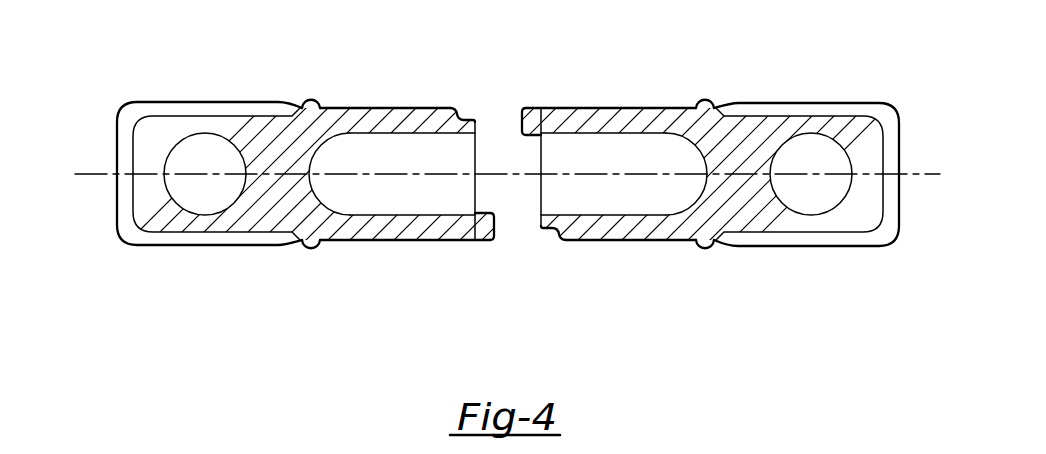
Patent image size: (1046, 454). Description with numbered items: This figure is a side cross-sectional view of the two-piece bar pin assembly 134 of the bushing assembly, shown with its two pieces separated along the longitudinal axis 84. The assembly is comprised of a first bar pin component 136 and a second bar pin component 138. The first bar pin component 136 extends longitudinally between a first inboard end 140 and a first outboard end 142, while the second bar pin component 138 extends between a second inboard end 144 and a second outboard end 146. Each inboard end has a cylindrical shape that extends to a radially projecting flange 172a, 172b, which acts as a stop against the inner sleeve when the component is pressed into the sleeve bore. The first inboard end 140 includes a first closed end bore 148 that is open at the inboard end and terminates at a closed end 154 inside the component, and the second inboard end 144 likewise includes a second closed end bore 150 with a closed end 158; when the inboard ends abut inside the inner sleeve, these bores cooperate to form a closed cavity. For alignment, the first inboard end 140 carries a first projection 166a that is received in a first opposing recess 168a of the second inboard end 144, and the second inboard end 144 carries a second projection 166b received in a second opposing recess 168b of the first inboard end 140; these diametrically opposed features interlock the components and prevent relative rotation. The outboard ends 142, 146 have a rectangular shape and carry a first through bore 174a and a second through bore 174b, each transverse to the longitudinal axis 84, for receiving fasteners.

The longitudinal axis 84 is at (921, 172).
The two-piece bar pin assembly 134 is at (671, 291).
The first bar pin component 136 is at (240, 122).
The second bar pin component 138 is at (788, 124).
The first inboard end 140 is at (478, 152).
The first outboard end 142 is at (106, 212).
The second inboard end 144 is at (538, 196).
The second outboard end 146 is at (911, 213).
The first closed end bore 148 is at (384, 165).
The second closed end bore 150 is at (626, 165).
The closed end 154 is at (331, 207).
The closed end 158 is at (690, 207).
The first projection 166a is at (486, 236).
The second projection 166b is at (524, 112).
The first opposing recess 168a is at (460, 118).
The second opposing recess 168b is at (551, 242).
The radially projecting flange 172a is at (309, 101).
The radially projecting flange 172b is at (703, 101).
The first through bore 174a is at (213, 196).
The second through bore 174b is at (825, 196).